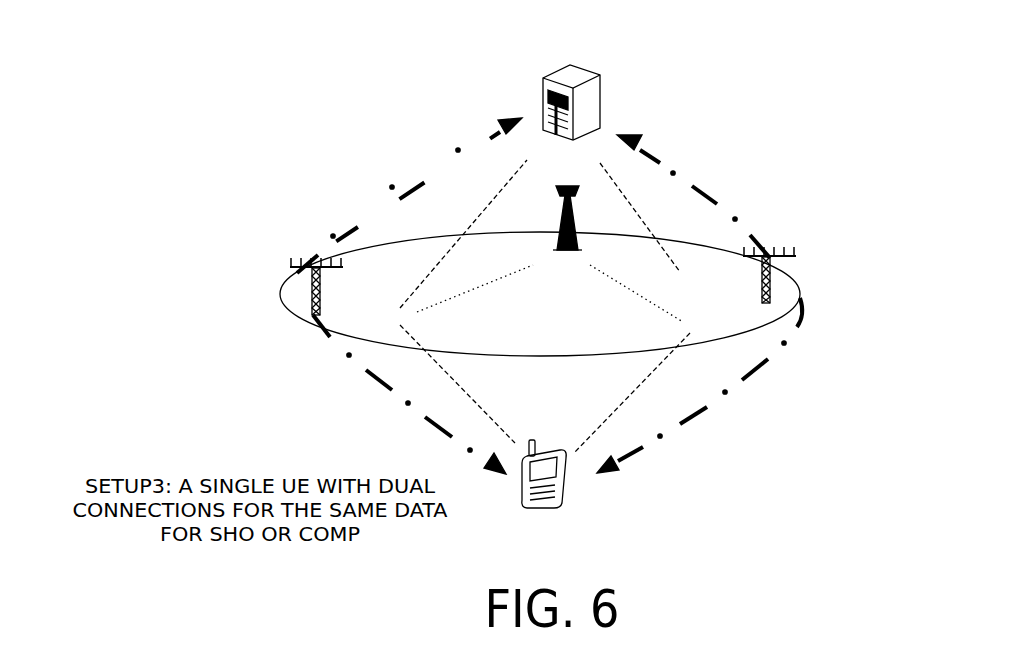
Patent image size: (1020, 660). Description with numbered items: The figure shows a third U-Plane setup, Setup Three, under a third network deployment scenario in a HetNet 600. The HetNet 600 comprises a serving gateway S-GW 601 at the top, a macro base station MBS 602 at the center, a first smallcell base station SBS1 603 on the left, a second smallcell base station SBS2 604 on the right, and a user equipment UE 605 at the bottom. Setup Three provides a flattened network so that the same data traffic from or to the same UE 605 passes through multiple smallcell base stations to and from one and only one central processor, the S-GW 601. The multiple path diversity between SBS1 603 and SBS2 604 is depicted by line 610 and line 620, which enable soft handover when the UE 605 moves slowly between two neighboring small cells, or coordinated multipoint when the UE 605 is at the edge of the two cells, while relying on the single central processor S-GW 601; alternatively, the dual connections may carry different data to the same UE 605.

The HetNet 600 is at (232, 66).
The serving gateway S-GW 601 is at (587, 75).
The macro base station MBS 602 is at (566, 241).
The first smallcell base station SBS1 603 is at (303, 262).
The second smallcell base station SBS2 604 is at (785, 250).
The user equipment UE 605 is at (538, 444).
The line 610 is at (365, 378).
The line 620 is at (745, 372).